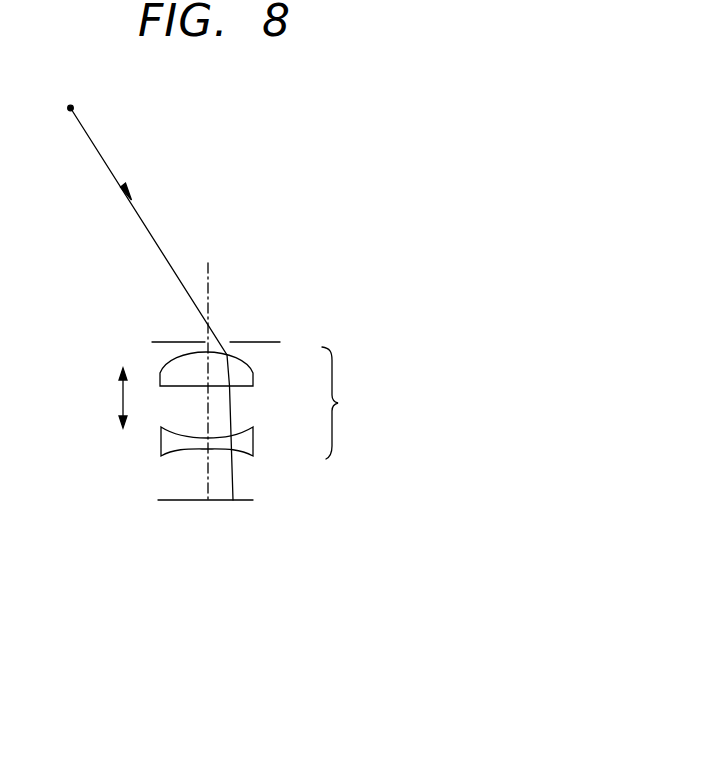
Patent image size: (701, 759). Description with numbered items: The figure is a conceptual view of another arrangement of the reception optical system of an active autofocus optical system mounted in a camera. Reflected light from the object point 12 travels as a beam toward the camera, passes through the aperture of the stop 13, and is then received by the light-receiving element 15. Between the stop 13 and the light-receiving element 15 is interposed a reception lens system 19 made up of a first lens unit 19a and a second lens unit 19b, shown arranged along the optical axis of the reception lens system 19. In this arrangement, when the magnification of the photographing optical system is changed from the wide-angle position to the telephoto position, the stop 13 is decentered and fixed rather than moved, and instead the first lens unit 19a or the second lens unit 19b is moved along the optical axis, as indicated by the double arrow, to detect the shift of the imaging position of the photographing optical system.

The object point 12 is at (72, 107).
The stop 13 is at (279, 342).
The light-receiving element 15 is at (253, 500).
The reception lens system 19 is at (347, 403).
The first lens unit 19a is at (253, 381).
The second lens unit 19b is at (252, 442).